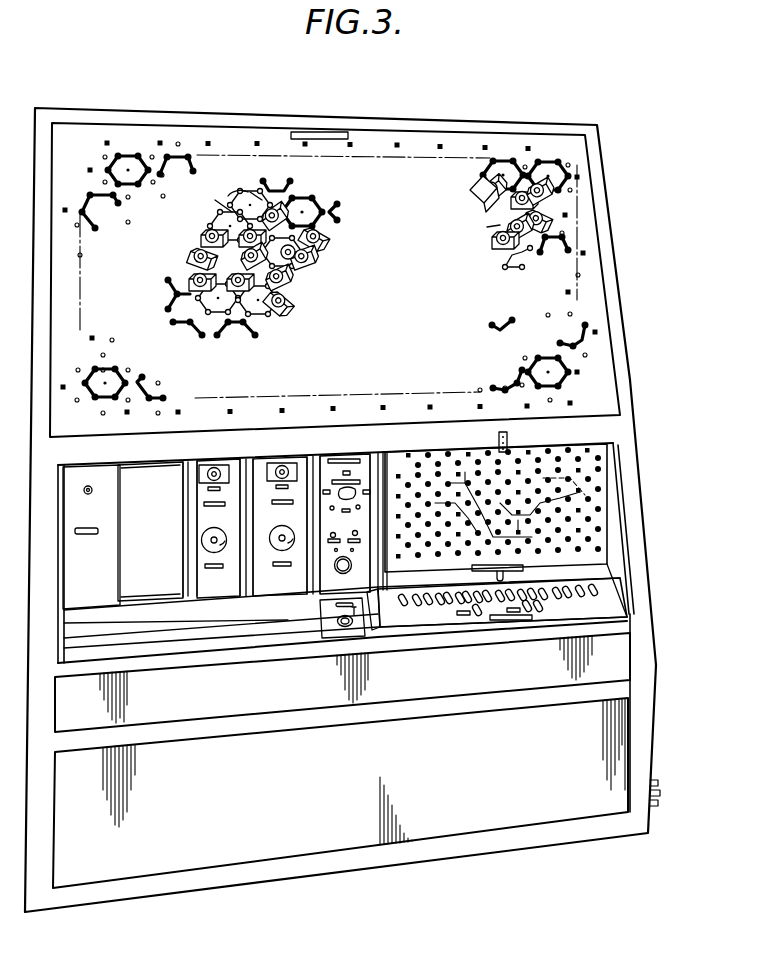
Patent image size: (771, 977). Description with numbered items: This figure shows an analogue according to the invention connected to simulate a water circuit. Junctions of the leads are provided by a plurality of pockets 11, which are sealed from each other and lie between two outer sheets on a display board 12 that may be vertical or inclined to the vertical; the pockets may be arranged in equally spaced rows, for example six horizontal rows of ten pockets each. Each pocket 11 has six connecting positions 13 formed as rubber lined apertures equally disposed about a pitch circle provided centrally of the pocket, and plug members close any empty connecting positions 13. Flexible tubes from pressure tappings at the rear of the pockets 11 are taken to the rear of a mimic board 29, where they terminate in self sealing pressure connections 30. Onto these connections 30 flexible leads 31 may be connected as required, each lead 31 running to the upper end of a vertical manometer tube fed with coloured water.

The pocket 11 is at (128, 168).
The display board 12 is at (335, 280).
The connecting position 13 is at (84, 201).
The mimic board 29 is at (537, 497).
The self sealing pressure connection 30 is at (612, 441).
The flexible lead 31 is at (452, 672).